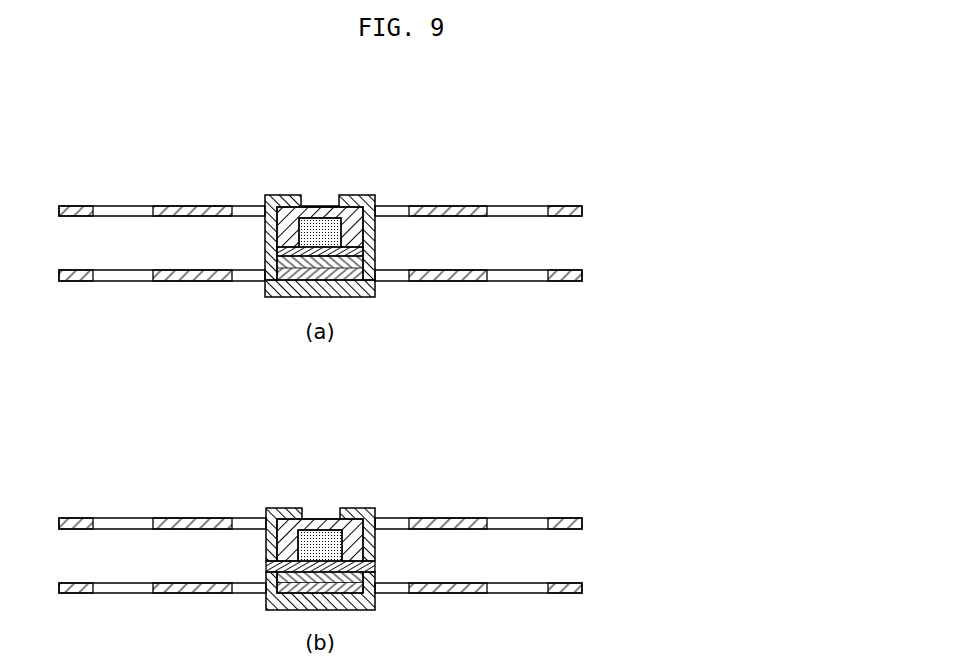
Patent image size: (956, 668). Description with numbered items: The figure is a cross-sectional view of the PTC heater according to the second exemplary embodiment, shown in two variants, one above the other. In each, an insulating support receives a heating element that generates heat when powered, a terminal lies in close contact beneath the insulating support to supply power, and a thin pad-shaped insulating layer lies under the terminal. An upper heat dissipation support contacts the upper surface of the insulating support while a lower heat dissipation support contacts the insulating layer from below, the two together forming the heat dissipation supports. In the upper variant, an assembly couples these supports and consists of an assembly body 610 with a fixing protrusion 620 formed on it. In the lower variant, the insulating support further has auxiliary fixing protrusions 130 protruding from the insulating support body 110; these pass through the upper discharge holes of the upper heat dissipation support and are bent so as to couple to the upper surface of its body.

The insulating support body 110 is at (318, 503).
The auxiliary fixing protrusions 130 is at (265, 516).
The assembly body 610 is at (377, 290).
The fixing protrusion 620 is at (375, 259).